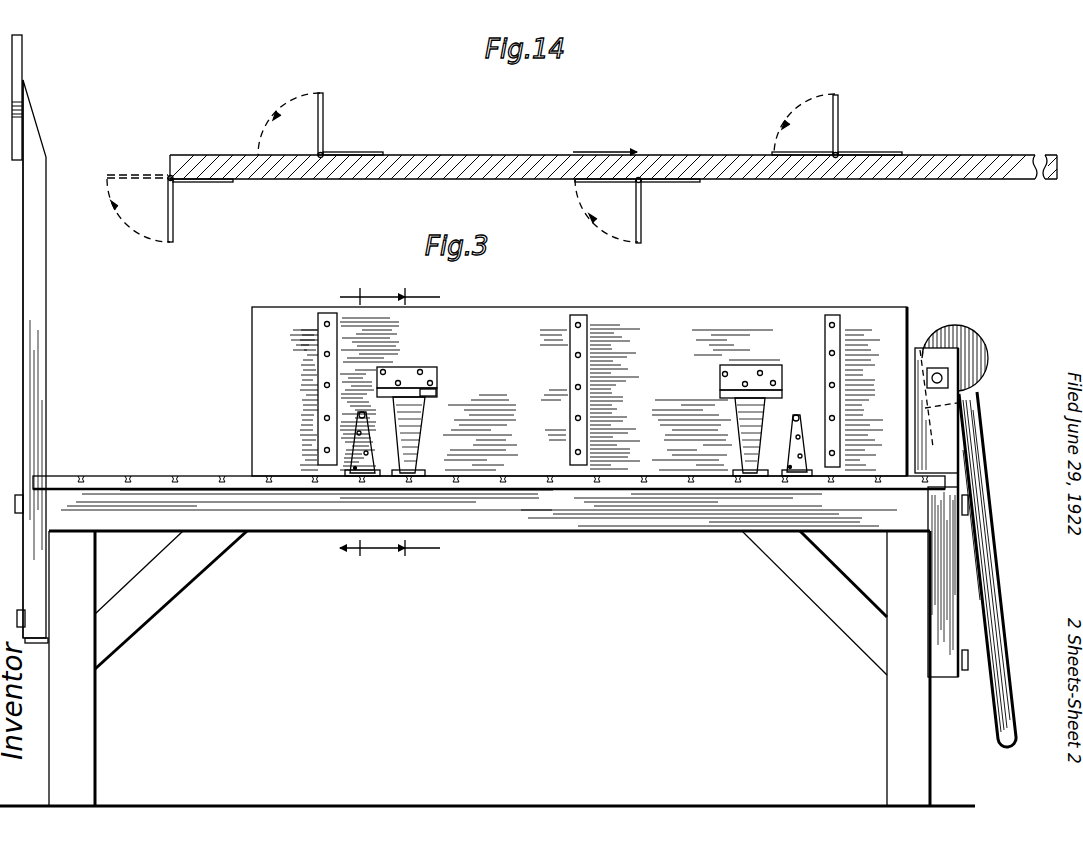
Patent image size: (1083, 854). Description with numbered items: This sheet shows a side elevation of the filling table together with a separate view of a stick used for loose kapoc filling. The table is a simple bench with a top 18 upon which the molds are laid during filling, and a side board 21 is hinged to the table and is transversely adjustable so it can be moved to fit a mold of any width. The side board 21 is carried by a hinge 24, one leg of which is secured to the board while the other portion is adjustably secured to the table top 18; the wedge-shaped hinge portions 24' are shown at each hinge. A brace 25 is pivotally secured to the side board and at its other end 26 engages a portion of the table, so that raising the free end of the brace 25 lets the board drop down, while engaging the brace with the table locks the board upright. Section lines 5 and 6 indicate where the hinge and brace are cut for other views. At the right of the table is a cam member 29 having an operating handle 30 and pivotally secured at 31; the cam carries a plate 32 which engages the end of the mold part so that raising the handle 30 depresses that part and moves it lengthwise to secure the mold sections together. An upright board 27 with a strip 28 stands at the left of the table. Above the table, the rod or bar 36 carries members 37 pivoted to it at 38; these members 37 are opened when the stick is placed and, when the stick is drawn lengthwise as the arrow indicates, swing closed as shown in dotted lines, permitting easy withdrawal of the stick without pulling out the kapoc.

In FIG. 14, the rod or bar 36 is at (478, 158).
In FIG. 14, the members 37 is at (175, 220).
In FIG. 14, the pivot 38 is at (168, 177).
In FIG. 3, the upright guide strip 28 is at (23, 55).
In FIG. 3, the side board 27 is at (47, 305).
In FIG. 3, the top 18 is at (158, 475).
In FIG. 3, the side board 21 is at (694, 318).
In FIG. 3, the brace 25 is at (420, 423).
In FIG. 3, the end of brace 26 is at (413, 478).
In FIG. 3, the hinge 24 is at (583, 391).
In FIG. 3, the wedge 24' is at (554, 465).
In FIG. 3, the section line 5- 5 is at (411, 420).
In FIG. 3, the section line 6- 6 is at (361, 421).
In FIG. 3, the cam member 29 is at (986, 346).
In FIG. 3, the operating handle 30 is at (1004, 647).
In FIG. 3, the pivot 31 is at (948, 378).
In FIG. 3, the plate 32 is at (962, 326).